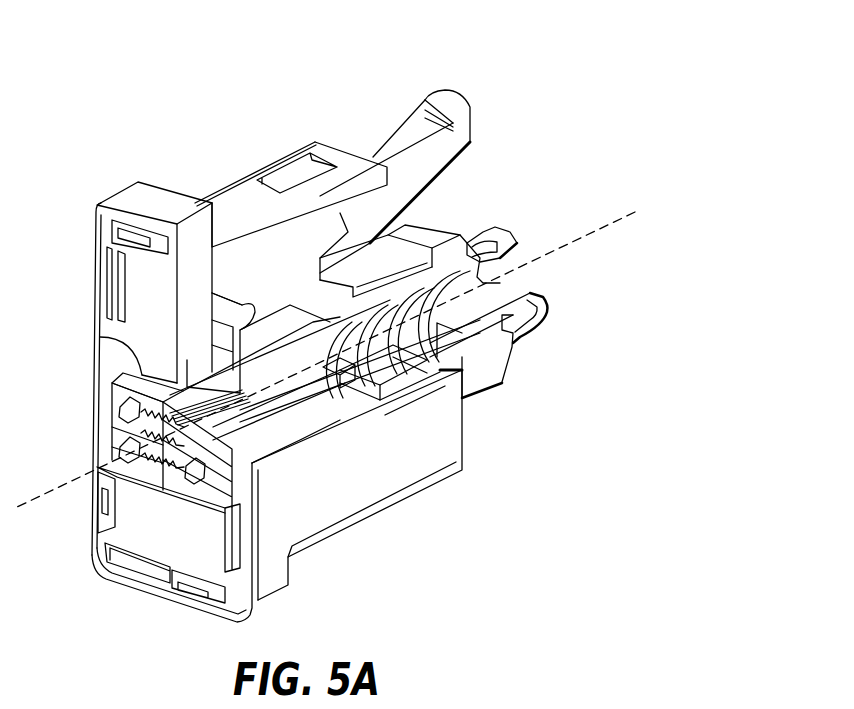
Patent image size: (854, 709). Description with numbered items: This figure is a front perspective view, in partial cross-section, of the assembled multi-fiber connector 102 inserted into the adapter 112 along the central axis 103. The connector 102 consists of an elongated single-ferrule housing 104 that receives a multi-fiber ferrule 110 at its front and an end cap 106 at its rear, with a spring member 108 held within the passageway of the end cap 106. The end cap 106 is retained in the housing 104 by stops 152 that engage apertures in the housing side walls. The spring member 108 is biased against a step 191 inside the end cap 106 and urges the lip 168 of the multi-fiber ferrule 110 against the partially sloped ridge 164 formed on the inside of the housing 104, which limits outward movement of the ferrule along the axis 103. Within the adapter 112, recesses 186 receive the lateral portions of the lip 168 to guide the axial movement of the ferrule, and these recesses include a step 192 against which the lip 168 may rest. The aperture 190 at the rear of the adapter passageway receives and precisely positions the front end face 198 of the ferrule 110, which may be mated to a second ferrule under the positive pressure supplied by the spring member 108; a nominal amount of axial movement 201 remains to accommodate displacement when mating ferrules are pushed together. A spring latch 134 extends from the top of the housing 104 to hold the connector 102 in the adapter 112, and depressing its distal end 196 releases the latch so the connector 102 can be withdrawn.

The multi-fiber connector 102 is at (532, 84).
The central axis 103 is at (595, 243).
The single-ferrule housing 104 is at (385, 258).
The end cap 106 is at (428, 240).
The spring member 108 is at (497, 288).
The multi-fiber ferrule 110 is at (167, 464).
The adapter 112 is at (232, 167).
The spring latch 134 is at (446, 84).
The stops 152 is at (460, 372).
The partially sloped ridge 164 is at (283, 318).
The lip 168 is at (300, 333).
The recesses 186 is at (364, 402).
The aperture 190 is at (140, 366).
The step 191 is at (468, 244).
The step 192 is at (327, 410).
The distal end 196 is at (455, 148).
The front end face 198 is at (120, 456).
The axial movement 201 is at (440, 385).